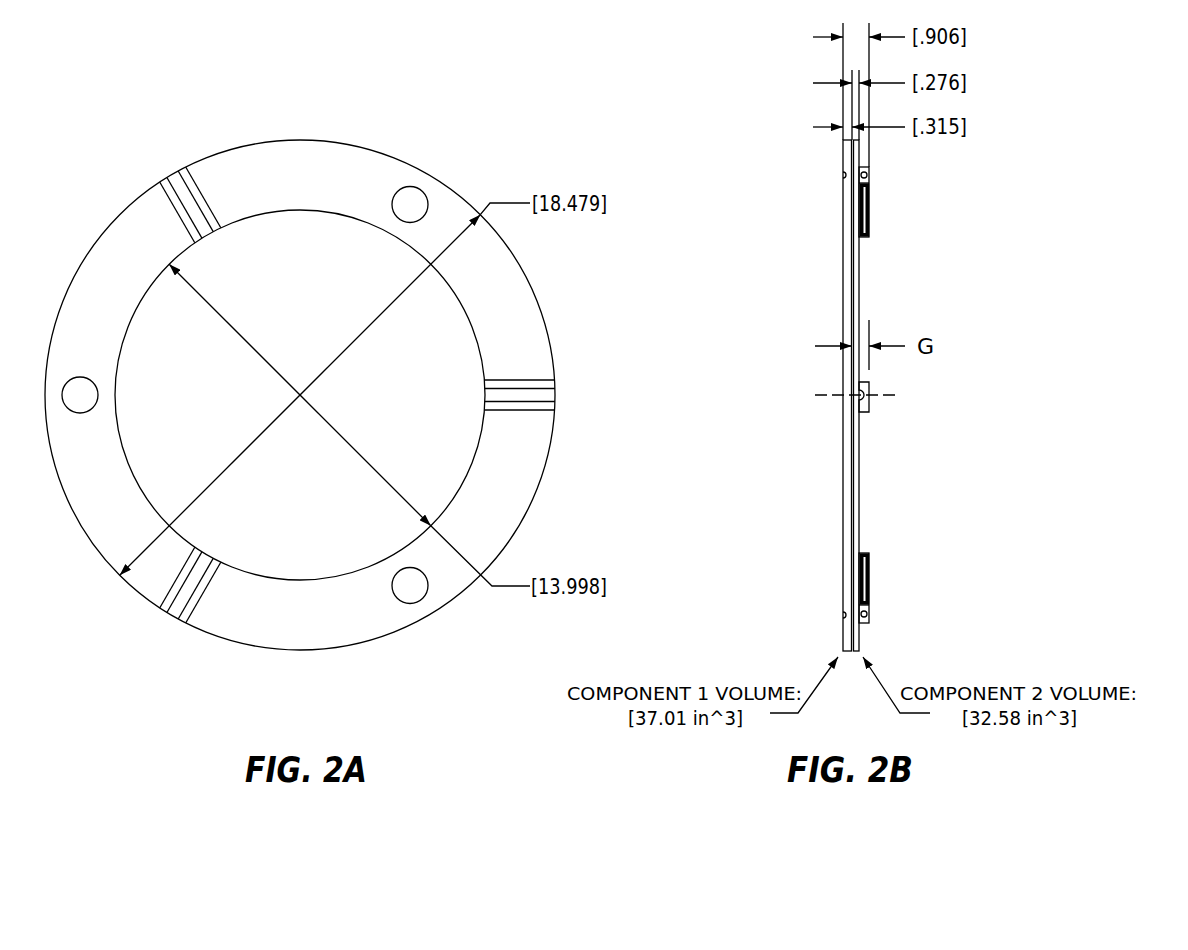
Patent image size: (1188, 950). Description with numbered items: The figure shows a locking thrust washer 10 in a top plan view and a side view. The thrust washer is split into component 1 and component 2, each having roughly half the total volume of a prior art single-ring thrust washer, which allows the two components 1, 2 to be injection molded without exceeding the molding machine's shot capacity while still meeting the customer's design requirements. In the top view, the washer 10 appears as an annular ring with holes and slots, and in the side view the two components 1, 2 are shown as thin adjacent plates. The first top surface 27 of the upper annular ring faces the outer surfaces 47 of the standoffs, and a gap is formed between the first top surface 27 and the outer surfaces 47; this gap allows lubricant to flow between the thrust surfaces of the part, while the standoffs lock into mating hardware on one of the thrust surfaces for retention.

In FIG. 2A, the locking thrust washer 10 is at (329, 353).
In FIG. 2B, the locking thrust washer 10 is at (923, 353).
In FIG. 2A, the first top surface 27 is at (510, 294).
In FIG. 2B, the first top surface 27 is at (852, 395).
In FIG. 2B, the component 1 is at (834, 482).
In FIG. 2B, the component 2 is at (868, 482).
In FIG. 2B, the outer surface 47 is at (870, 211).